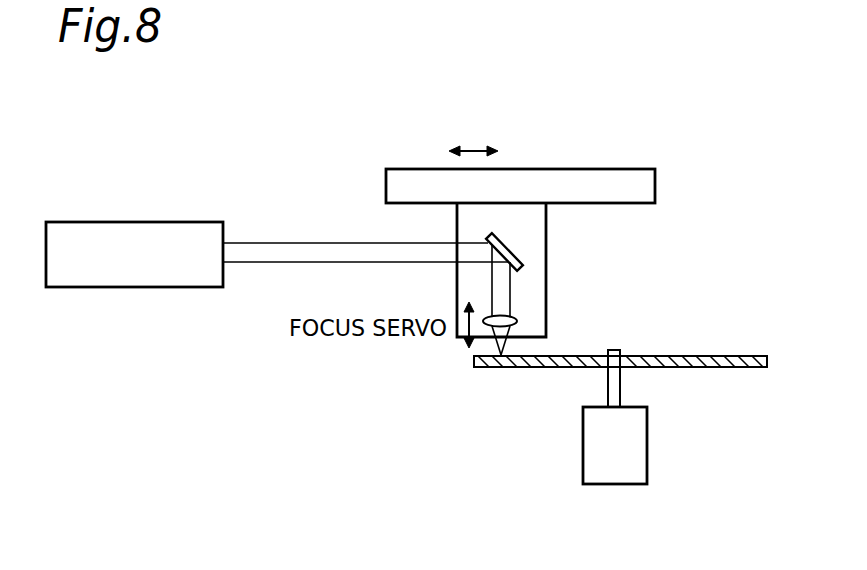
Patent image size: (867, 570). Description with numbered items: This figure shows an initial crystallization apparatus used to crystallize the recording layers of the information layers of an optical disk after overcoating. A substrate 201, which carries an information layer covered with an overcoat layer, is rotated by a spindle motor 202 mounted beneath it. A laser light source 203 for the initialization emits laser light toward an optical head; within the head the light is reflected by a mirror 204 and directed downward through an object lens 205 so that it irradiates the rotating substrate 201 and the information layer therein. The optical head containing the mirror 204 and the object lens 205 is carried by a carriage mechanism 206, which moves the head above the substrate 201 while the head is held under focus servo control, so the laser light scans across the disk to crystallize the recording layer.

The substrate 201 is at (684, 368).
The spindle motor 202 is at (592, 446).
The laser 203 is at (141, 222).
The mirror 204 is at (520, 261).
The object lens 205 is at (517, 319).
The carriage mechanism 206 is at (609, 169).